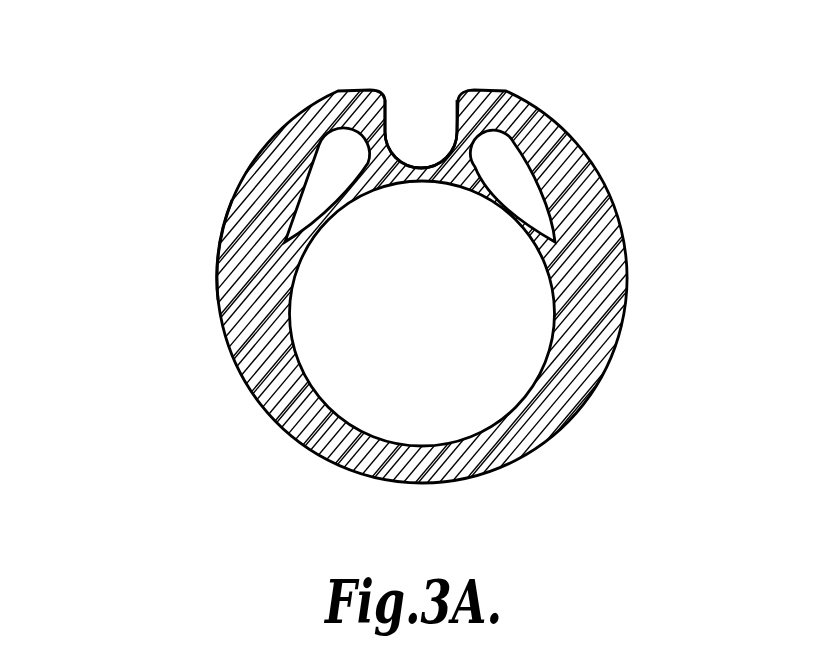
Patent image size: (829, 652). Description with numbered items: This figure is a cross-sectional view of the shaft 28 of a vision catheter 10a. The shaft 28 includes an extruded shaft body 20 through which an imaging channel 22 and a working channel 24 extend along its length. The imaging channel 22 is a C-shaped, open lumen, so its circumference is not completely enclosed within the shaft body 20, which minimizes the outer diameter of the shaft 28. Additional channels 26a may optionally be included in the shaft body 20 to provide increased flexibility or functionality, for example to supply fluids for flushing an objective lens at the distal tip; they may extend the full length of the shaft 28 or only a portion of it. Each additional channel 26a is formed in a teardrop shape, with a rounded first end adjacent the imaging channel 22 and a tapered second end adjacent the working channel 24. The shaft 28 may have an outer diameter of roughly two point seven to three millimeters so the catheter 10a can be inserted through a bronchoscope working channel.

The vision catheter 10a is at (414, 260).
The extruded shaft body 20 is at (617, 224).
The imaging channel 22 is at (422, 110).
The working channel 24 is at (513, 353).
The additional channel 26a is at (342, 158).
The shaft 28 is at (221, 308).